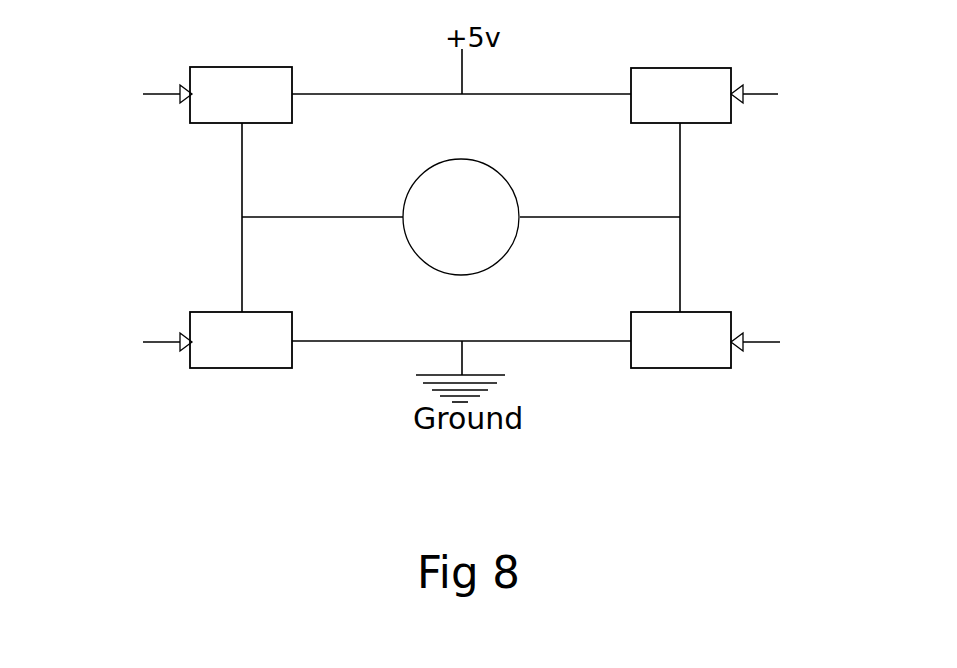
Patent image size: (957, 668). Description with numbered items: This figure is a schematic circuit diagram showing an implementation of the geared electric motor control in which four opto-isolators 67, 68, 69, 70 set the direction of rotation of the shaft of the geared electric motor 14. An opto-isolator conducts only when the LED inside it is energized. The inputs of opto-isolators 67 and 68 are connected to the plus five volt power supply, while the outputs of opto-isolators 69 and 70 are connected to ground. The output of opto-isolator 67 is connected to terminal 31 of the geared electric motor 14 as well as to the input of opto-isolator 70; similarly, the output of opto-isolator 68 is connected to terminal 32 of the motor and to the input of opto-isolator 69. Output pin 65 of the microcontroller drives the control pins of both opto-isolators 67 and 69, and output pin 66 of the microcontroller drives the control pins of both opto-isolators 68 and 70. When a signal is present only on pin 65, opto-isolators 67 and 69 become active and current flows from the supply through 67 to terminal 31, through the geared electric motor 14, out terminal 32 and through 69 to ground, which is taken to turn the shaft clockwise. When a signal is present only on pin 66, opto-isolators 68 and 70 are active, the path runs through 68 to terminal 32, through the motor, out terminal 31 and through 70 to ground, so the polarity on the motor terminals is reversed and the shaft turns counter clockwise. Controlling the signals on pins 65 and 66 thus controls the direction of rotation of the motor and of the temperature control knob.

The geared electric motor 14 is at (523, 147).
The terminal of the geared electric motor 31 is at (285, 217).
The terminal of the geared electric motor 32 is at (642, 217).
The output pin of the microcontroller 65 is at (457, 218).
The output pin of the microcontroller 66 is at (465, 207).
The opto-isolator 67 is at (202, 76).
The opto-isolator 68 is at (709, 75).
The opto-isolator 69 is at (724, 319).
The opto-isolator 70 is at (193, 312).